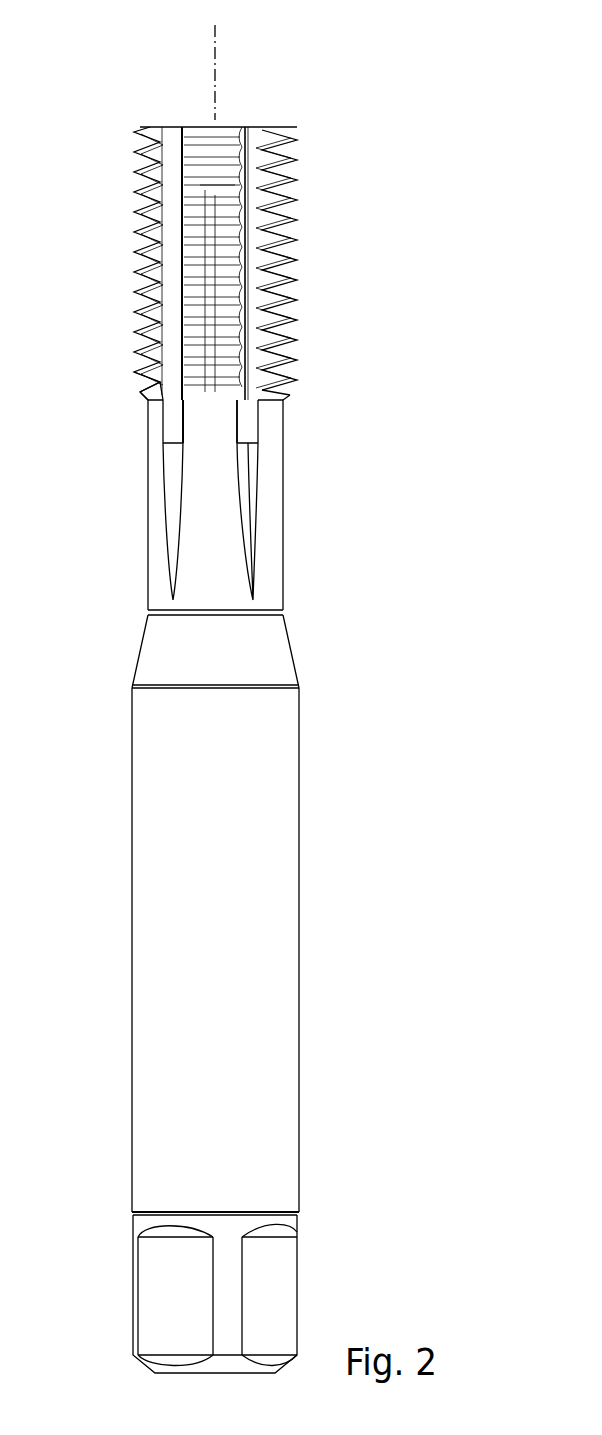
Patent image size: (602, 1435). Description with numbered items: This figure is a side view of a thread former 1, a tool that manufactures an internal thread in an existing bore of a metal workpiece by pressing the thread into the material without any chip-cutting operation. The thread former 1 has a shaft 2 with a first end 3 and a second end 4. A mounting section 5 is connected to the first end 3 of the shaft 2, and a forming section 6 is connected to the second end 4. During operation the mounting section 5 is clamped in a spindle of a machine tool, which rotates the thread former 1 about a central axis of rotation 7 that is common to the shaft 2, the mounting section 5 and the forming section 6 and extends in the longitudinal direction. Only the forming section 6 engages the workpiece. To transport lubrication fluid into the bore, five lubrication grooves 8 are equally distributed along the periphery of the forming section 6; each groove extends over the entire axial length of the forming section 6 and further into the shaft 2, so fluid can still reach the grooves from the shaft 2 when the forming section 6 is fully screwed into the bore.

The thread former 1 is at (318, 100).
The shaft 2 is at (305, 403).
The first end 3 is at (132, 1212).
The second end 4 is at (153, 400).
The mounting section 5 is at (307, 1213).
The forming section 6 is at (305, 127).
The axis of rotation 7 is at (216, 50).
The lubrication grooves 8 is at (172, 260).